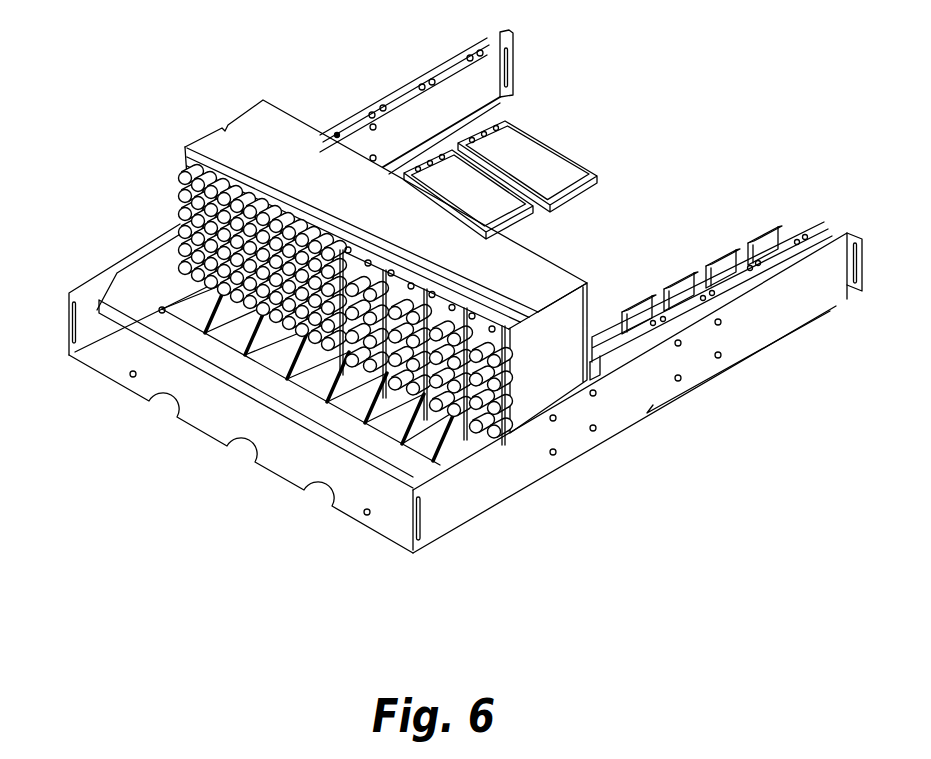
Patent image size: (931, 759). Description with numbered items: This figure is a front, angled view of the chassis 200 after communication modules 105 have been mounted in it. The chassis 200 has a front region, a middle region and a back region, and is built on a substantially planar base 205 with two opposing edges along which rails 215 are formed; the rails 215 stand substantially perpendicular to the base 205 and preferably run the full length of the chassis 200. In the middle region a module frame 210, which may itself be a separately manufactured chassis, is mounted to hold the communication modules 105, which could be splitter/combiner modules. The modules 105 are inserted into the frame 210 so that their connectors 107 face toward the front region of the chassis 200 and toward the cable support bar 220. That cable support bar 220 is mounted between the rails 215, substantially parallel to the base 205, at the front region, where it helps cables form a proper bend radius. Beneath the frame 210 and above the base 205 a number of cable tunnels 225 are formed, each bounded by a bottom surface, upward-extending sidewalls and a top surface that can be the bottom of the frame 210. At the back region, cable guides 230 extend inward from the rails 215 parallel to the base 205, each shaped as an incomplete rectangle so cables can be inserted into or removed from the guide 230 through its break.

The chassis 200 is at (446, 421).
The base 205 is at (227, 425).
The module frame 210 is at (275, 127).
The rails 215 is at (72, 357).
The cable support bar 220 is at (320, 425).
The cable tunnels 225 is at (227, 335).
The cable guides 230 is at (557, 157).
The communication modules 105 is at (297, 227).
The connectors 107 is at (178, 195).